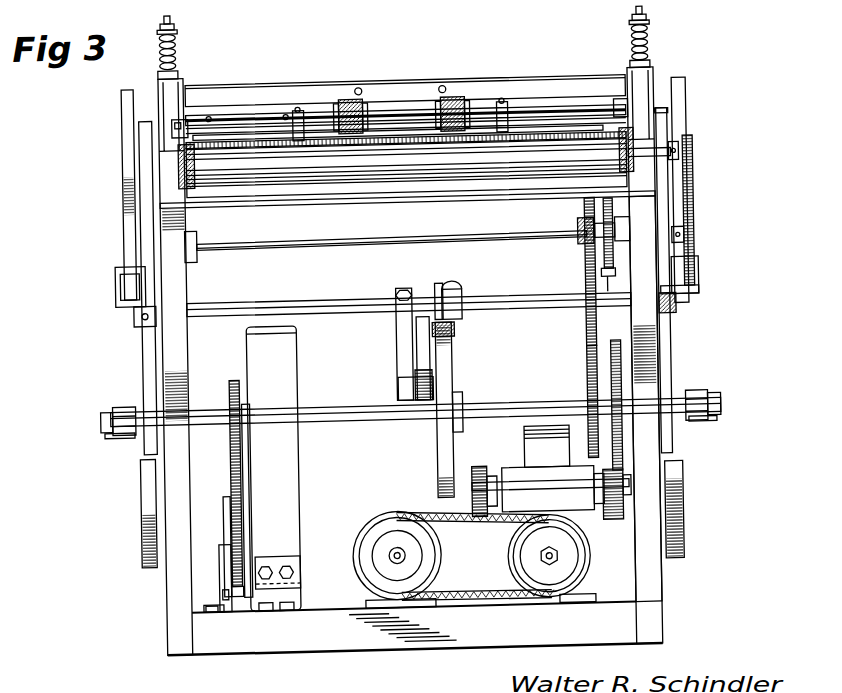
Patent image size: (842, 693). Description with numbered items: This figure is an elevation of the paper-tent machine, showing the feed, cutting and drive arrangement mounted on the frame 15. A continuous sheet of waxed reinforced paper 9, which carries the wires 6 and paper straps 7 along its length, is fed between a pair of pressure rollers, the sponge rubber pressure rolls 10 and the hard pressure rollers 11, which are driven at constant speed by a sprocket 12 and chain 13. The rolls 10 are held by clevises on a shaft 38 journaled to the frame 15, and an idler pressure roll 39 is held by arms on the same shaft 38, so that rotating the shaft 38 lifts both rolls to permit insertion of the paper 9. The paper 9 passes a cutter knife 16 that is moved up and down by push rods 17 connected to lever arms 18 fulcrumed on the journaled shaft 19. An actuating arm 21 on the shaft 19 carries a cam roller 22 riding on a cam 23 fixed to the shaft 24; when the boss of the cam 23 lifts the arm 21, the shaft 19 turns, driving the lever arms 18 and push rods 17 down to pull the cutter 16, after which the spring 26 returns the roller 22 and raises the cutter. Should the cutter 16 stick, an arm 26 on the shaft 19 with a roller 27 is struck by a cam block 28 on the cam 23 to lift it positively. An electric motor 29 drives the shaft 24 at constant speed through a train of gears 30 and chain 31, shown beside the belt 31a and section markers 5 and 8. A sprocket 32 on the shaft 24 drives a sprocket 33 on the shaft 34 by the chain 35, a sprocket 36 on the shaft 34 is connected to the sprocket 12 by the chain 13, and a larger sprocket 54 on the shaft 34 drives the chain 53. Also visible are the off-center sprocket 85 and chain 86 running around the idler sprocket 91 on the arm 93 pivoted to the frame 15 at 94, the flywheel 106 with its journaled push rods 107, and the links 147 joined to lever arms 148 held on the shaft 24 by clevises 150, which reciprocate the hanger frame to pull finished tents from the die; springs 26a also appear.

The section line 5- 5 is at (467, 322).
The wires 6 is at (455, 143).
The paper straps 7 is at (383, 133).
The section line 8- 8 is at (225, 340).
The reinforced paper 9 is at (547, 137).
The pressure rolls 10 is at (352, 98).
The pressure rollers 11 is at (386, 172).
The sprocket 12 is at (690, 153).
The chain 13 is at (696, 212).
The frame 15 is at (660, 373).
The cutter knife 16 is at (276, 99).
The push rods 17 is at (150, 224).
The lever arms 18 is at (145, 319).
The journaled shaft 19 is at (521, 299).
The actuating arm 21 is at (440, 292).
The cam roller 22 is at (455, 330).
The cam 23 is at (452, 452).
The shaft 24 is at (510, 405).
The spring / arm 26 is at (398, 338).
The spring 26a is at (188, 48).
The roller 27 is at (433, 388).
The cam block 28 is at (418, 340).
The electric motor 29 is at (378, 520).
The train of gears 30 is at (562, 505).
The chain 31 is at (620, 464).
The belt 31a is at (487, 600).
The sprocket 32 is at (590, 390).
The sprocket 33 is at (584, 248).
The shaft 34 is at (282, 245).
The chain 35 is at (590, 330).
The sprocket 36 is at (686, 247).
The shaft 38 is at (547, 118).
The idler pressure roll 39 is at (335, 143).
The chain 53 is at (606, 211).
The sprocket 54 is at (609, 281).
The off-center sprocket 85 is at (229, 391).
The chain 86 is at (241, 460).
The idler sprocket 91 is at (241, 562).
The arm 93 is at (222, 510).
The pivot 94 is at (217, 593).
The flywheel 106 is at (139, 488).
The push rods 107 is at (127, 159).
The links 147 is at (105, 421).
The lever arms 148 is at (110, 429).
The clevises 150 is at (120, 400).